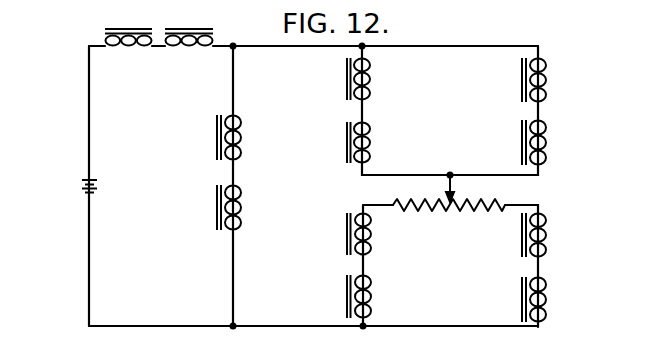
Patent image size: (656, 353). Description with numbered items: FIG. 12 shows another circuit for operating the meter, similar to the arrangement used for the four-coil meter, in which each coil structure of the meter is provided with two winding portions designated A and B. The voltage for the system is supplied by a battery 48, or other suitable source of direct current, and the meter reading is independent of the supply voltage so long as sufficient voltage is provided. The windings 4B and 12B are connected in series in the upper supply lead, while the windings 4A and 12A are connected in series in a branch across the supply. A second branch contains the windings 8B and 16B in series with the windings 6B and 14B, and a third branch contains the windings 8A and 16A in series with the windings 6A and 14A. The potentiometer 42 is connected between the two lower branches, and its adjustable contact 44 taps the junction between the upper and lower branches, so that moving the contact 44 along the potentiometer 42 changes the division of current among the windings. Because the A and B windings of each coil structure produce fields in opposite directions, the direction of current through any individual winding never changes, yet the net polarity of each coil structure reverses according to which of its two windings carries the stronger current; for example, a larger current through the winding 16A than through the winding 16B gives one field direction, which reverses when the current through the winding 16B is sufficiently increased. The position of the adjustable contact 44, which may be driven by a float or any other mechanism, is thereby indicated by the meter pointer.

The winding 4B is at (134, 50).
The winding 12B is at (190, 50).
The winding 4A is at (242, 142).
The winding 12A is at (242, 213).
The winding 8B is at (373, 78).
The winding 16B is at (372, 140).
The winding 6B is at (547, 77).
The winding 14B is at (547, 135).
The winding 8A is at (373, 240).
The winding 16A is at (372, 296).
The winding 6A is at (549, 230).
The winding 14A is at (549, 297).
The potentiometer 42 is at (487, 212).
The adjustable contact 44 is at (456, 197).
The battery 48 is at (81, 186).